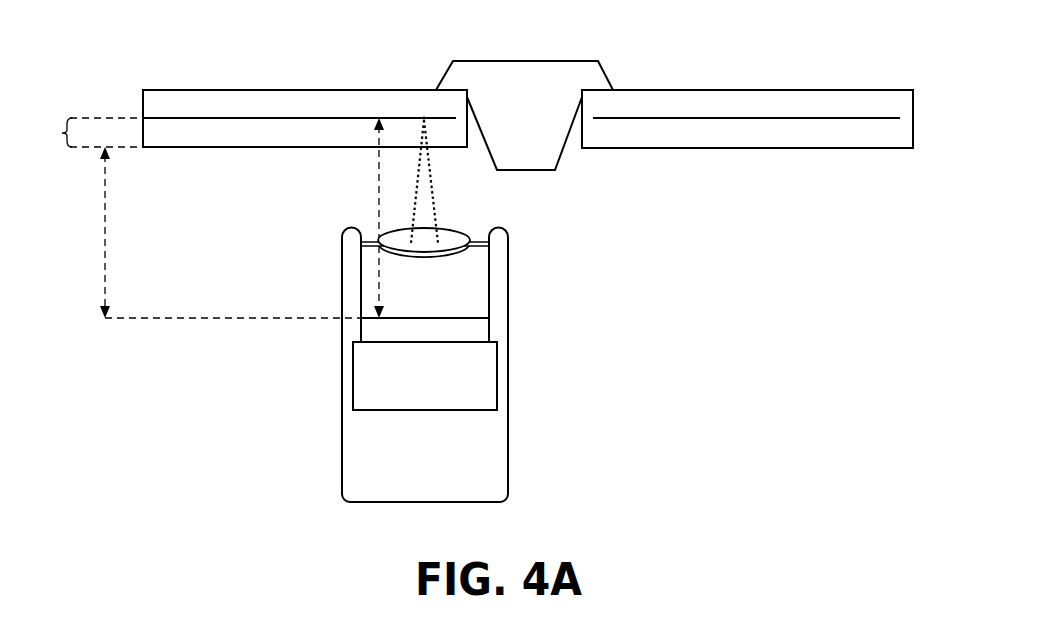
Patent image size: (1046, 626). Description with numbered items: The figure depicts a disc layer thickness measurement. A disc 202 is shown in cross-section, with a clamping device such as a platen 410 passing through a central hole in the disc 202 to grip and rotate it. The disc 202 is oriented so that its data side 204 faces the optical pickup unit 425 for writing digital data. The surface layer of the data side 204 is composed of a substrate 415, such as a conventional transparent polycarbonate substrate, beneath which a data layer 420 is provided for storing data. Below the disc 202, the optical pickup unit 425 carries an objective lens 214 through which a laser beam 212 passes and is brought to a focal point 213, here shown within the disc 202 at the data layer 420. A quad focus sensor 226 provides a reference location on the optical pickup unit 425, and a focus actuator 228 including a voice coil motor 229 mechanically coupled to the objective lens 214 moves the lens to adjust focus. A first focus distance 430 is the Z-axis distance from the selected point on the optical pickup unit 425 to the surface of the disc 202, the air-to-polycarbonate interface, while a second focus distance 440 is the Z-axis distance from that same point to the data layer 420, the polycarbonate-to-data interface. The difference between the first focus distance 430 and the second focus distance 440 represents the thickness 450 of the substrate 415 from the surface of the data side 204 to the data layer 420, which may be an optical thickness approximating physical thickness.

The disc 202 is at (335, 90).
The data side 204 is at (773, 148).
The platen 410 is at (553, 61).
The data layer 420 is at (263, 118).
The substrate 415 is at (223, 135).
The thickness 450 is at (62, 133).
The first focus distance 430 is at (105, 220).
The second focus distance 440 is at (379, 193).
The optical pickup unit 425 is at (552, 338).
The quad focus sensor 226 is at (460, 318).
The objective lens 214 is at (457, 241).
The laser beam 212 is at (438, 207).
The focal point 213 is at (424, 118).
The voice coil motor 229 is at (471, 394).
The focus actuator 228 is at (411, 480).